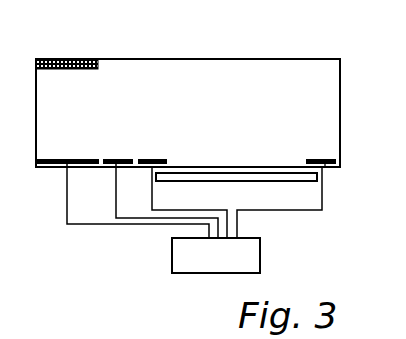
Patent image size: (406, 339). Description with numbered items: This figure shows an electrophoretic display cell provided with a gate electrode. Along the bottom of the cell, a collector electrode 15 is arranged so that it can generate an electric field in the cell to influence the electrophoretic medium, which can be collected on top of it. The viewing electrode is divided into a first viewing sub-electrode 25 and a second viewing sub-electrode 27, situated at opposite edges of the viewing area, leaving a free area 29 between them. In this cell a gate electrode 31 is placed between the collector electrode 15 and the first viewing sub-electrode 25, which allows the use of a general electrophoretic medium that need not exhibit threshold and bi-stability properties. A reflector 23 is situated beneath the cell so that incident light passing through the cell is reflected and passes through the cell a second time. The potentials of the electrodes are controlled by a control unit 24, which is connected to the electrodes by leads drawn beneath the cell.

The collector electrode 15 is at (66, 197).
The reflector 23 is at (285, 180).
The control unit 24 is at (260, 251).
The first viewing sub-electrode 25 is at (153, 158).
The second viewing sub-electrode 27 is at (325, 159).
The free area 29 is at (314, 45).
The gate electrode 31 is at (125, 158).